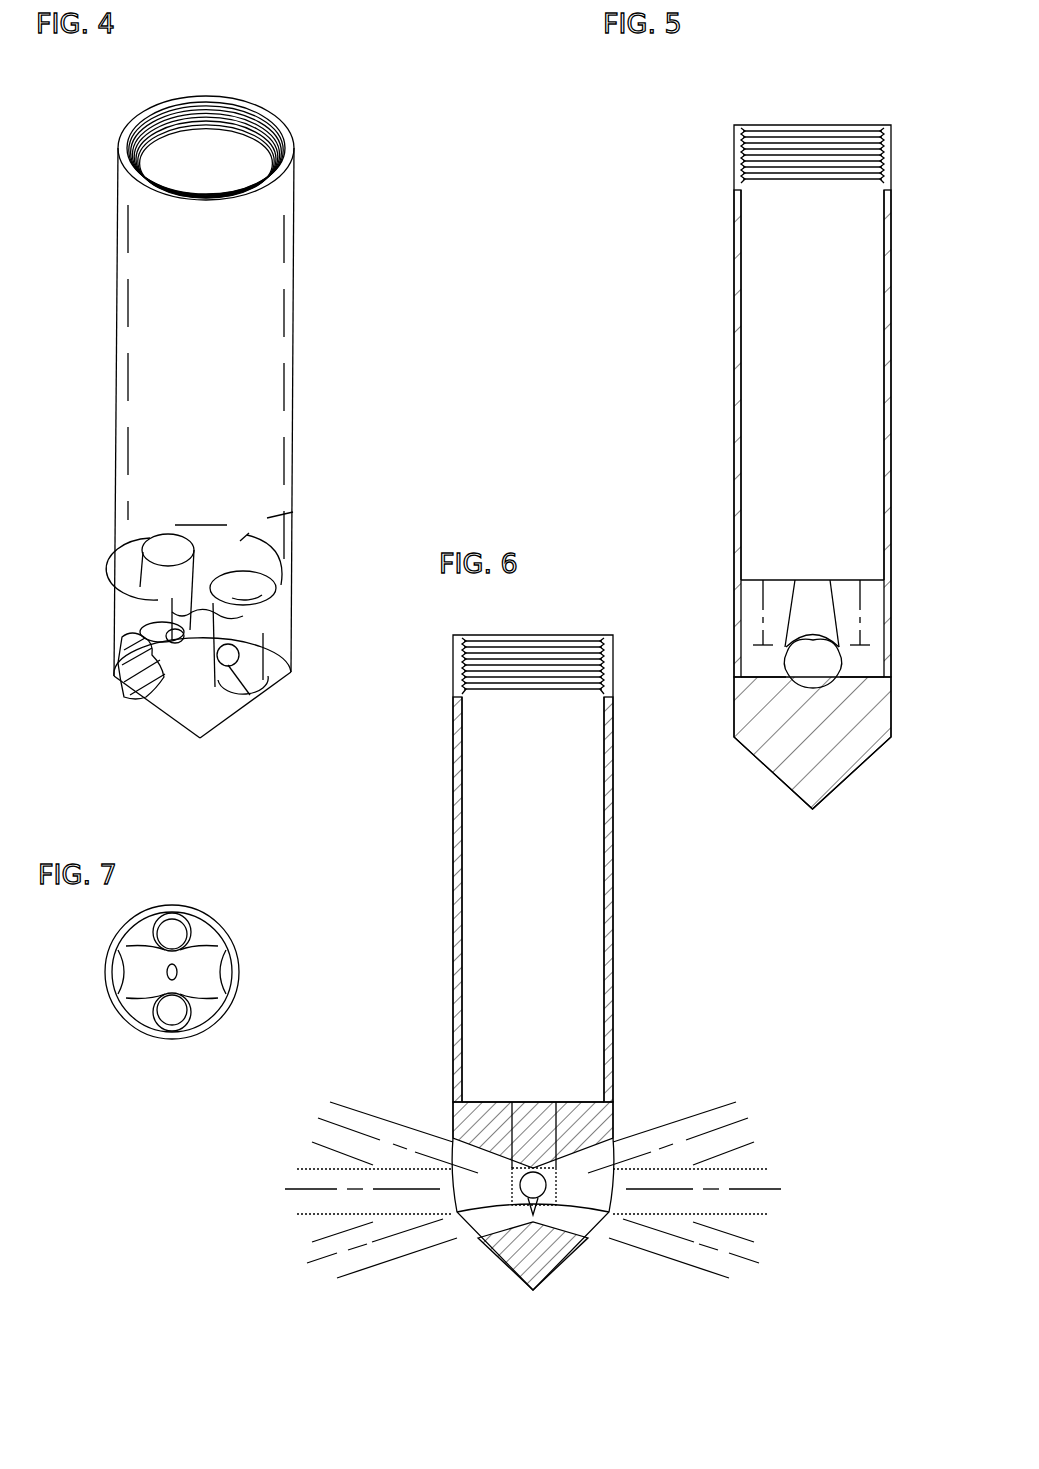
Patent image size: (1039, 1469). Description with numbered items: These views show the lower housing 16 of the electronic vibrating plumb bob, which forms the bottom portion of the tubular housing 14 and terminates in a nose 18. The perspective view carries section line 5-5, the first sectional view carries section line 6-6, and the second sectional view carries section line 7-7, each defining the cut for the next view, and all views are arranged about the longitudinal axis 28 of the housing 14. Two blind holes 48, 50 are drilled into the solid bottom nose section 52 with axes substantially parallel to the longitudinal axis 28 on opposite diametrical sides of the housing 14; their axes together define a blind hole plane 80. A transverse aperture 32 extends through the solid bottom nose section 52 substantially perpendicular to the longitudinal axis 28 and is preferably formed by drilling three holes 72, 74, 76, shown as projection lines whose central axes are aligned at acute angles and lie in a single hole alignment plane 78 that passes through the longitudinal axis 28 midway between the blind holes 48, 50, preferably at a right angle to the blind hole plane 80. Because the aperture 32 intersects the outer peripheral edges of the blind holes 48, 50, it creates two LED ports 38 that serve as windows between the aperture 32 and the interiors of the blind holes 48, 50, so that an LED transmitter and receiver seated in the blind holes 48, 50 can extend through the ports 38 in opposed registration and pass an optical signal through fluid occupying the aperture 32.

In FIG. 4, the section line 5- 5 is at (283, 33).
In FIG. 5, the section line 6- 6 is at (899, 53).
In FIG. 6, the section line 7- 7 is at (428, 969).
In FIG. 4, the housing 14 is at (118, 321).
In FIG. 5, the housing 14 is at (735, 294).
In FIG. 6, the housing 14 is at (452, 842).
In FIG. 7, the housing 14 is at (118, 1010).
In FIG. 4, the lower housing 16 is at (268, 441).
In FIG. 4, the nose 18 is at (195, 736).
In FIG. 6, the nose 18 is at (501, 1258).
In FIG. 5, the longitudinal axis 28 is at (812, 510).
In FIG. 6, the longitudinal axis 28 is at (533, 1360).
In FIG. 7, the longitudinal axis 28 is at (65, 972).
In FIG. 4, the aperture 32 is at (128, 674).
In FIG. 5, the aperture 32 is at (825, 671).
In FIG. 6, the aperture 32 is at (551, 1213).
In FIG. 7, the aperture 32 is at (118, 962).
In FIG. 4, the LED ports 38 is at (128, 648).
In FIG. 5, the LED ports 38 is at (783, 659).
In FIG. 6, the LED ports 38 is at (537, 1167).
In FIG. 4, the blind hole 48 is at (152, 542).
In FIG. 5, the blind hole 48 is at (760, 605).
In FIG. 7, the blind hole 48 is at (178, 920).
In FIG. 4, the blind hole 50 is at (260, 590).
In FIG. 5, the blind hole 50 is at (864, 605).
In FIG. 6, the blind hole 50 is at (537, 1104).
In FIG. 7, the blind hole 50 is at (174, 1015).
In FIG. 4, the solid bottom nose section 52 is at (265, 518).
In FIG. 5, the solid bottom nose section 52 is at (846, 751).
In FIG. 6, the solid bottom nose section 52 is at (483, 1111).
In FIG. 6, the hole 72 is at (320, 1183).
In FIG. 6, the hole 74 is at (334, 1247).
In FIG. 6, the hole 76 is at (343, 1120).
In FIG. 7, the hole alignment plane 78 is at (92, 976).
In FIG. 7, the blind hole plane 80 is at (170, 1058).